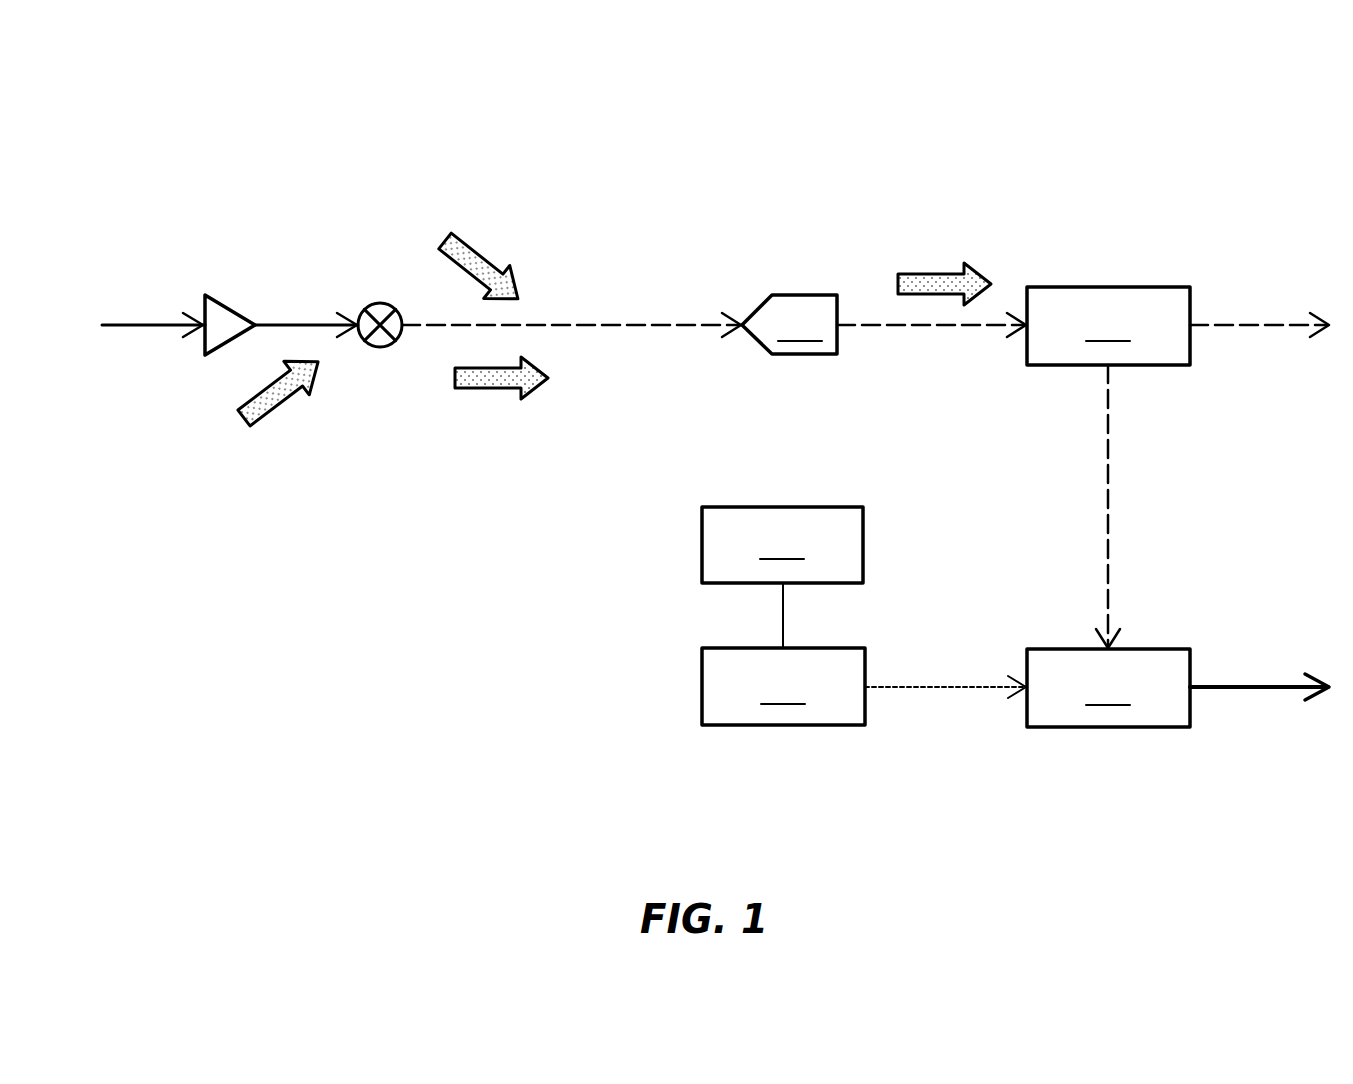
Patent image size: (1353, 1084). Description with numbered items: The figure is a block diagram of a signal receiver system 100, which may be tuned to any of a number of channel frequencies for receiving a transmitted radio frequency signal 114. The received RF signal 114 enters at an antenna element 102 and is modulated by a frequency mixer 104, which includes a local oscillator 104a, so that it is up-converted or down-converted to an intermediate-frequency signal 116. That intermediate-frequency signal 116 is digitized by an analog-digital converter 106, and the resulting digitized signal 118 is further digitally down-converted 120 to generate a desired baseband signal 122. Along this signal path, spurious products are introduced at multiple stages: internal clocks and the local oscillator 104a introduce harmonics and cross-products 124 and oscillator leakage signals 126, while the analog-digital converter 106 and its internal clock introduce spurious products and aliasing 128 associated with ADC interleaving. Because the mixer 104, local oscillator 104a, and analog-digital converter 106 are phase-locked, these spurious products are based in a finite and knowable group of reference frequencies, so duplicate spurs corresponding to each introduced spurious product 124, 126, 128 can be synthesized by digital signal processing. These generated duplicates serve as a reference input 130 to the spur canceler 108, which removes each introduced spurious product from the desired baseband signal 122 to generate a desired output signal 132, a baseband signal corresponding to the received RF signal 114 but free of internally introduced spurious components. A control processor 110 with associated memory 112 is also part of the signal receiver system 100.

The signal receiver system 100 is at (132, 133).
The antenna element 102 is at (233, 306).
The frequency mixer 104 is at (384, 303).
The local oscillator 104a is at (373, 347).
The analog-digital converter 106 is at (789, 324).
The spur canceler 108 is at (1108, 688).
The control processor 110 is at (783, 686).
The memory 112 is at (782, 577).
The radio frequency signal 114 is at (158, 325).
The intermediate-frequency signal 116 is at (563, 323).
The digitized signal 118 is at (923, 328).
The digital down-conversion 120 is at (1108, 326).
The desired baseband signal 122 is at (1250, 325).
The harmonics and cross-products 124 is at (478, 252).
The oscillator leakage signal 126 is at (480, 390).
The spurious products and aliasing 128 is at (930, 273).
The reference input 130 is at (947, 685).
The desired output signal 132 is at (1252, 687).